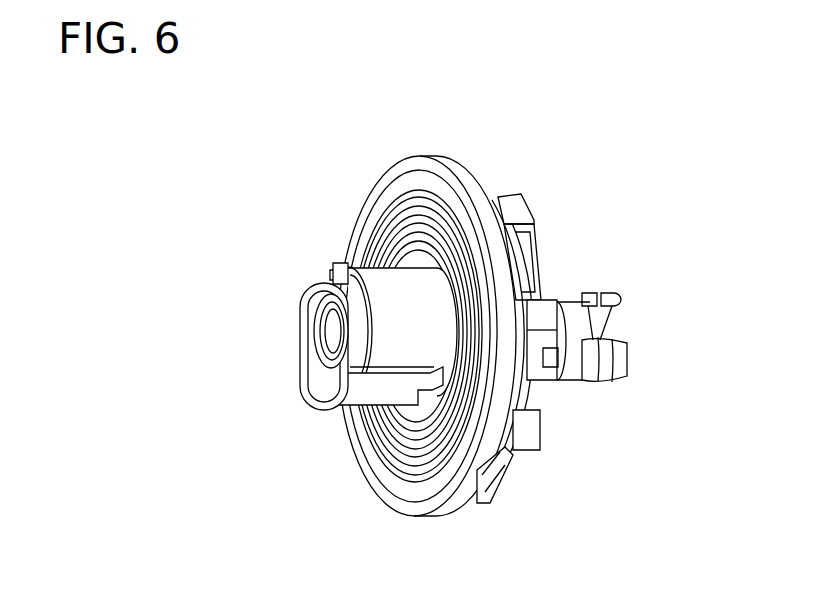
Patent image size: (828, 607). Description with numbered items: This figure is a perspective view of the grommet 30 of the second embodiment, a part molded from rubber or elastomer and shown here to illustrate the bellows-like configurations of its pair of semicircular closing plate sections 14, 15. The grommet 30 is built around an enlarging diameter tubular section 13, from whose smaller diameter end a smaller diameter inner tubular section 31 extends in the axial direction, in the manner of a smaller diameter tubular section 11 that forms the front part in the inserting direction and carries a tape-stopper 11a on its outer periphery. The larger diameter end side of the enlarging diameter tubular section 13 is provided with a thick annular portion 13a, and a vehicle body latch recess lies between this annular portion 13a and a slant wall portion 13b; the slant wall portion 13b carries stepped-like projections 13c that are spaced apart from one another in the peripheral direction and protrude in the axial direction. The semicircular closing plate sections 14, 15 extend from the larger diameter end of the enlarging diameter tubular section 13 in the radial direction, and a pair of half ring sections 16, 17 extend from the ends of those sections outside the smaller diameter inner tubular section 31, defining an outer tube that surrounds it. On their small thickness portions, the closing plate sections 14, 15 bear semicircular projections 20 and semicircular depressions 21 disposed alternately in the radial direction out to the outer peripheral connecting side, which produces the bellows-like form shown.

The grommet 30 is at (233, 100).
The smaller diameter tubular section 11 is at (562, 298).
The tape-stopper 11a is at (586, 383).
The enlarging diameter tubular section 13 is at (494, 200).
The annular portion 13a is at (448, 158).
The slant wall portion 13b is at (522, 275).
The stepped-like projections 13c is at (524, 243).
The semicircular closing plate section 14 is at (426, 192).
The semicircular closing plate section 15 is at (374, 428).
The half ring section 16 is at (333, 268).
The half ring section 17 is at (316, 397).
The semicircular projections 20 is at (420, 205).
The semicircular depressions 21 is at (390, 213).
The smaller diameter inner tubular section 31 is at (330, 333).